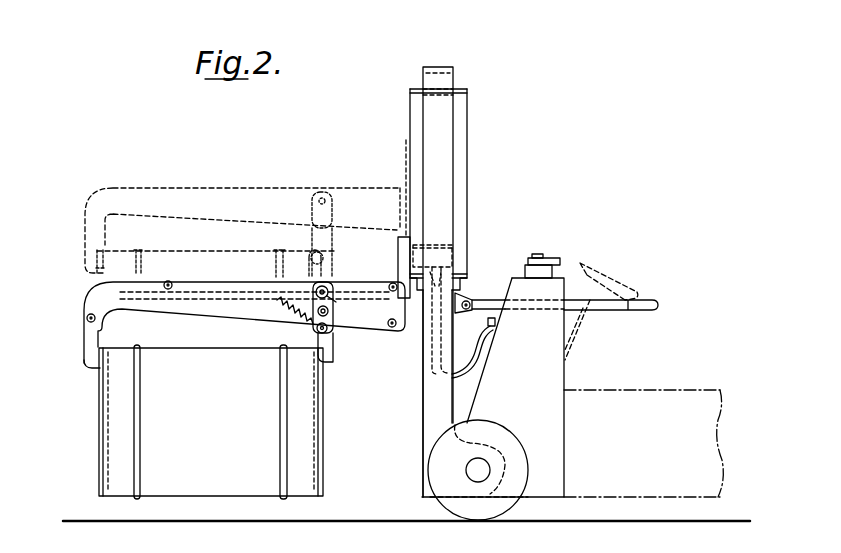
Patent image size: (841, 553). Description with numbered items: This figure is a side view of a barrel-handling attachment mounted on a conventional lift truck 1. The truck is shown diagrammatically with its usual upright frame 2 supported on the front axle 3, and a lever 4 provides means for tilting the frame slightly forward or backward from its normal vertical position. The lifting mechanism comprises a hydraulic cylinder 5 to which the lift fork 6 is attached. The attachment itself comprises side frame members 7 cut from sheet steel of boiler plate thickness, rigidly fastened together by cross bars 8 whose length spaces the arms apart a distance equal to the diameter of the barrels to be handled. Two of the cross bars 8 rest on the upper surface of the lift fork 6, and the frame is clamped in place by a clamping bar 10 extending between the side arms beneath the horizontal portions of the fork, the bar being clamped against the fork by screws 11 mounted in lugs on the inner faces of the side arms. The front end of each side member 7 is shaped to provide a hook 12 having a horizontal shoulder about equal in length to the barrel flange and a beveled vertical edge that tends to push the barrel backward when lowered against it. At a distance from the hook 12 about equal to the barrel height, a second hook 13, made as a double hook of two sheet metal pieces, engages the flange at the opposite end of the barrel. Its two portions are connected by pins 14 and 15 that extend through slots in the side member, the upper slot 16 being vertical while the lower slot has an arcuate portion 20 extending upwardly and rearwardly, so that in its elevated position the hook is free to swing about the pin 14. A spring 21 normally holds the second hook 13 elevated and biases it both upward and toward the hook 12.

The lift truck 1 is at (566, 375).
The upright frame 2 is at (421, 394).
The front axle 3 is at (473, 483).
The lever 4 is at (487, 297).
The hydraulic cylinder 5 is at (466, 205).
The lift fork 6 is at (398, 240).
The side frame member 7 is at (211, 188).
The cross bar 8 is at (85, 318).
The clamping bar 10 is at (305, 254).
The screw 11 is at (271, 252).
The hook 12 is at (95, 365).
The second hook 13 is at (330, 227).
The pin 14 is at (331, 289).
The pin 15 is at (329, 313).
The slot 16 is at (334, 278).
The arcuate portion 20 is at (336, 299).
The spring 21 is at (290, 323).